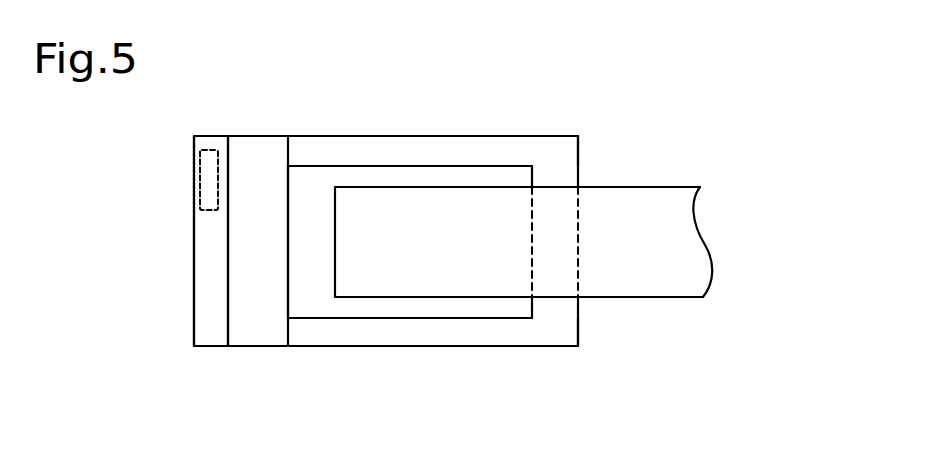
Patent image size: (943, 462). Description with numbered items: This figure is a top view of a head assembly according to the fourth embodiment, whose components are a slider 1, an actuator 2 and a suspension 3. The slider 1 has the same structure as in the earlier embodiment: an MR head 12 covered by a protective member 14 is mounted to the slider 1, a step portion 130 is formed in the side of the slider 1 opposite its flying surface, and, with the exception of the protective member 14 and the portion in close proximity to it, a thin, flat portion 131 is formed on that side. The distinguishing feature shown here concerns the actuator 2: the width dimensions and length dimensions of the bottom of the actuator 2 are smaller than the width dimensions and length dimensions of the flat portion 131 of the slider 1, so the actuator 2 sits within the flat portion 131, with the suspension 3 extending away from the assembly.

The slider 1 is at (312, 348).
The actuator 2 is at (312, 192).
The suspension 3 is at (613, 273).
The MR head 12 is at (207, 180).
The protective member 14 is at (210, 299).
The step portion 130 is at (447, 127).
The flat portion 131 is at (462, 333).